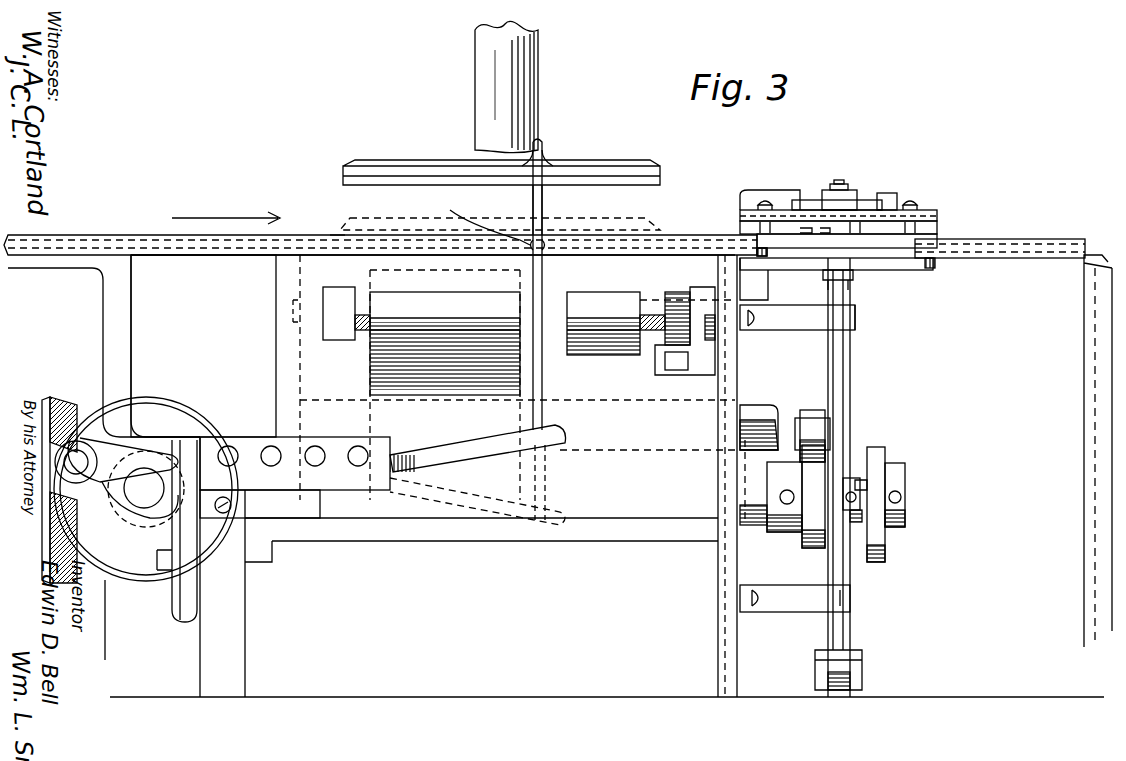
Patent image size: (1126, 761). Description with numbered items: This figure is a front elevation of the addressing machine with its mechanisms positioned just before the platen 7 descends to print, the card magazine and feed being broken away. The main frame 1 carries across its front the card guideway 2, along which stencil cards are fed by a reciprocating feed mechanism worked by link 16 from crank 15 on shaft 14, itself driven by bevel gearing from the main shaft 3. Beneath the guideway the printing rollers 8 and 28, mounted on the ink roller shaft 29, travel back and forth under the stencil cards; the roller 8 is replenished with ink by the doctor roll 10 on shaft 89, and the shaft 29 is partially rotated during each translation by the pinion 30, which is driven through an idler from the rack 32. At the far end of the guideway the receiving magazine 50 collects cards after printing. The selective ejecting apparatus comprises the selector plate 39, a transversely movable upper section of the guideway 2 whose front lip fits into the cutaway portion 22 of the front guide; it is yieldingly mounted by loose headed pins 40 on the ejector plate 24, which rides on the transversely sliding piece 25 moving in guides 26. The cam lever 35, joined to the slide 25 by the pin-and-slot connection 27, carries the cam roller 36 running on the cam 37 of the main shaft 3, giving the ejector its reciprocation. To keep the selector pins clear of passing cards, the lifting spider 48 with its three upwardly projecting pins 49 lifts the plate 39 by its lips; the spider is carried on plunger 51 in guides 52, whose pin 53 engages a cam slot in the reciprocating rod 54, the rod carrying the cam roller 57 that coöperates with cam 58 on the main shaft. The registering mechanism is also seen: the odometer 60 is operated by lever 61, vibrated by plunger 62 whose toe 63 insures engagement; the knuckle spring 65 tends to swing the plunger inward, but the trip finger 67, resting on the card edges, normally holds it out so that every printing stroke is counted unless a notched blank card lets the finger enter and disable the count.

The main frame 1 is at (280, 280).
The card guideway 2 is at (330, 245).
The main shaft 3 is at (760, 483).
The platen 7 is at (620, 170).
The printing roller 8 is at (440, 358).
The doctor roll 10 is at (380, 377).
The shaft 14 is at (145, 487).
The crank 15 is at (103, 460).
The link 16 is at (68, 420).
The cutaway portion 22 is at (905, 258).
The ejector plate 24 is at (938, 220).
The transversely sliding piece 25 is at (868, 200).
The guides 26 is at (893, 200).
The pin-and-slot connection 27 is at (832, 228).
The printing roller 28 is at (612, 355).
The ink roller shaft 29 is at (566, 335).
The pinion 30 is at (672, 292).
The rack 32 is at (676, 360).
The cam lever 35 is at (852, 380).
The cam roller 36 is at (812, 418).
The cam 37 is at (802, 545).
The selector plate 39 is at (745, 238).
The loose headed pins 40 is at (762, 207).
The lifting spider 48 is at (878, 262).
The upwardly projecting pins 49 is at (755, 262).
The receiving magazine 50 is at (1095, 398).
The plunger 51 is at (852, 348).
The guides 52 is at (812, 320).
The pin 53 is at (860, 498).
The reciprocating rod 54 is at (860, 508).
The cam roller 57 is at (900, 488).
The cam 58 is at (882, 450).
The odometer 60 is at (349, 492).
The lever 61 is at (474, 447).
The plunger 62 is at (545, 208).
The toe 63 is at (546, 445).
The knuckle spring 65 is at (545, 150).
The trip finger 67 is at (480, 220).
The shaft 89 is at (748, 418).